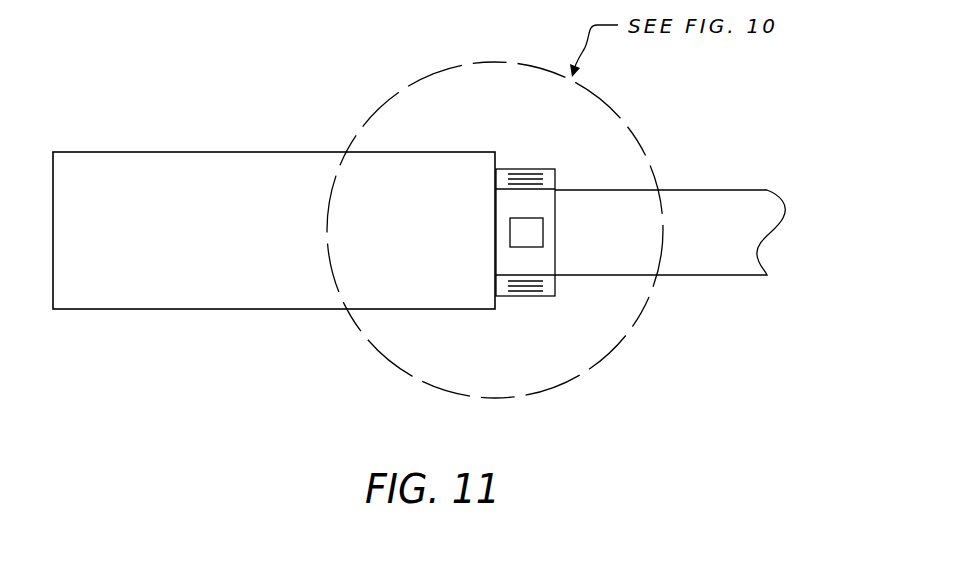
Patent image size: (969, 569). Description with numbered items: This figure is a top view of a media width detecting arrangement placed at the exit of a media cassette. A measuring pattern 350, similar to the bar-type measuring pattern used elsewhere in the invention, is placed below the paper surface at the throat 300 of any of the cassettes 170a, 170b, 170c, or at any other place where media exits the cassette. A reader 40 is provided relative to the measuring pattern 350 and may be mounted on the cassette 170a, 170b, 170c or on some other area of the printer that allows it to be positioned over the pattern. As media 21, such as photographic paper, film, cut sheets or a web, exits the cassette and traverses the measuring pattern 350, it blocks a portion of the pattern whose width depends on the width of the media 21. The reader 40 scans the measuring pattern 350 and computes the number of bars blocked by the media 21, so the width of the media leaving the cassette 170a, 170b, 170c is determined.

The cassette 170a is at (110, 309).
The cassette 170b is at (274, 283).
The cassette 170c is at (274, 283).
The throat 300 is at (527, 169).
The measuring pattern 350 is at (520, 300).
The reader 40 is at (510, 233).
The media 21 is at (640, 187).